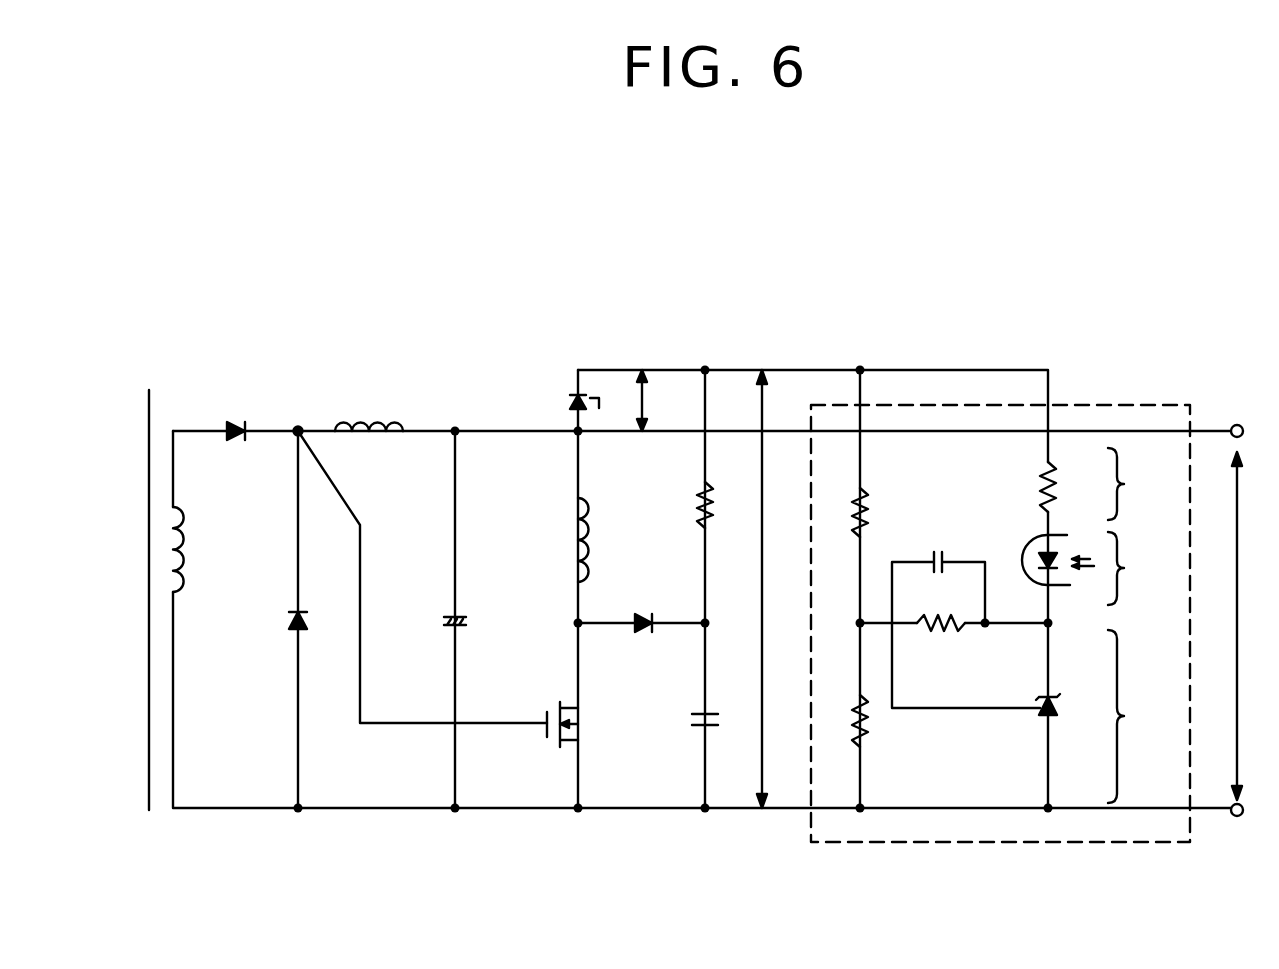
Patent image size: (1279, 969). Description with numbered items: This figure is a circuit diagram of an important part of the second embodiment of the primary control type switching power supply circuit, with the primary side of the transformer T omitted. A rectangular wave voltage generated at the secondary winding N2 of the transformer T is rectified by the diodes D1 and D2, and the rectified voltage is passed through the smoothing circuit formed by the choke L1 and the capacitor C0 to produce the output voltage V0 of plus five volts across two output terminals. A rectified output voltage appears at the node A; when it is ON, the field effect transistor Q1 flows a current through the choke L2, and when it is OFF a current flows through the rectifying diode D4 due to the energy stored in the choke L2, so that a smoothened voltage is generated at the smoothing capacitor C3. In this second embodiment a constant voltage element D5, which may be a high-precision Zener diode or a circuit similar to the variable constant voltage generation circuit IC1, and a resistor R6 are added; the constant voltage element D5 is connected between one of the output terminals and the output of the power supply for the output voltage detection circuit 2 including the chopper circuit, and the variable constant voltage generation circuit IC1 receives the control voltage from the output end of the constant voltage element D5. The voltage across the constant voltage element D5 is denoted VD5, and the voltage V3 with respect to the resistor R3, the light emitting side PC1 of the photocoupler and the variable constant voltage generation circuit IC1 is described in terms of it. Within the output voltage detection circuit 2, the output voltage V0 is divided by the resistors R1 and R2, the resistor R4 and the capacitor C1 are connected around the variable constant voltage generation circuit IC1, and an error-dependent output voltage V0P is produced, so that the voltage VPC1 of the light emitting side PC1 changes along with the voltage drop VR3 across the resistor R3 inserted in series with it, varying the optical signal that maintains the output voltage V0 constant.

The transformer T is at (146, 600).
The secondary winding N2 is at (202, 549).
The diode D1 is at (241, 411).
The node A is at (282, 451).
The choke L1 is at (369, 405).
The diode D2 is at (266, 626).
The capacitor C0 is at (429, 626).
The constant voltage element D5 is at (557, 408).
The choke L2 is at (551, 540).
The resistor R6 is at (675, 505).
The rectifying diode D4 is at (644, 606).
The field effect transistor Q1 is at (587, 724).
The smoothing capacitor C3 is at (685, 725).
The resistor R1 is at (841, 515).
The resistor R2 is at (841, 721).
The resistor R4 is at (937, 607).
The capacitor C1 is at (938, 571).
The resistor R3 is at (1067, 487).
The light emitting side of photocoupler PC1 is at (1063, 580).
The variable constant voltage generation circuit IC1 is at (1072, 710).
The output voltage detection circuit 2 is at (882, 843).
The voltage across constant voltage element D5 VD5 is at (666, 400).
The voltage V3 is at (763, 589).
The voltage drop across resistor R3 VR3 is at (1142, 484).
The voltage of light emitting side PC1 VPC1 is at (1148, 568).
The output voltage of operational amplifier V0P is at (1142, 716).
The output voltage V0 is at (1239, 626).